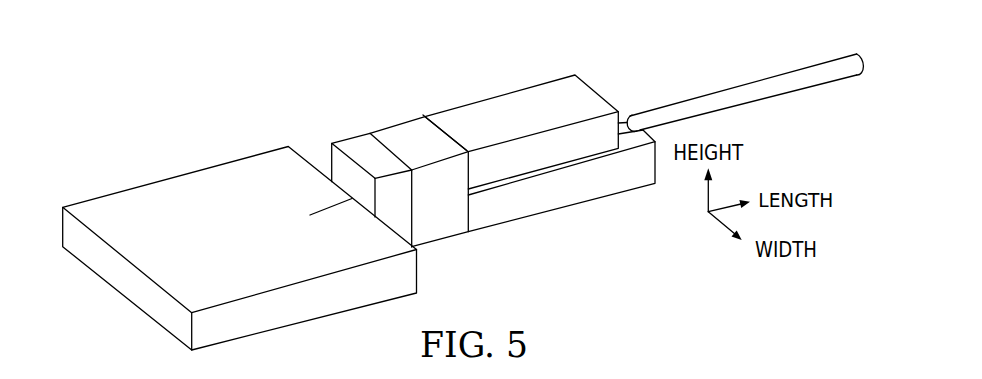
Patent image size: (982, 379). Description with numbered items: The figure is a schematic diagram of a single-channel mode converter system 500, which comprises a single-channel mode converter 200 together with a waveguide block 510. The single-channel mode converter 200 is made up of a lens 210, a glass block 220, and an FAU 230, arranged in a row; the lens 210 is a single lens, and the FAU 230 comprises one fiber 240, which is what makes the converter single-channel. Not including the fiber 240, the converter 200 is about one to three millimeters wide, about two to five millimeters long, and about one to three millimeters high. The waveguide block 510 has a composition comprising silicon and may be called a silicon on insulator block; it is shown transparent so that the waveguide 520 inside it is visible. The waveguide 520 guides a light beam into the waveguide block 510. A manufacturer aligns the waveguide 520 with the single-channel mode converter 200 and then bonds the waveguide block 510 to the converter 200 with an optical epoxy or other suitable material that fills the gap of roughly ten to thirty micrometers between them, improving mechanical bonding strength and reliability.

The single-channel mode converter system 500 is at (243, 60).
The single-channel mode converter 200 is at (438, 57).
The lens 210 is at (353, 147).
The glass block 220 is at (410, 132).
The FAU 230 is at (508, 105).
The fiber 240 is at (736, 66).
The waveguide block 510 is at (185, 183).
The waveguide 520 is at (320, 210).